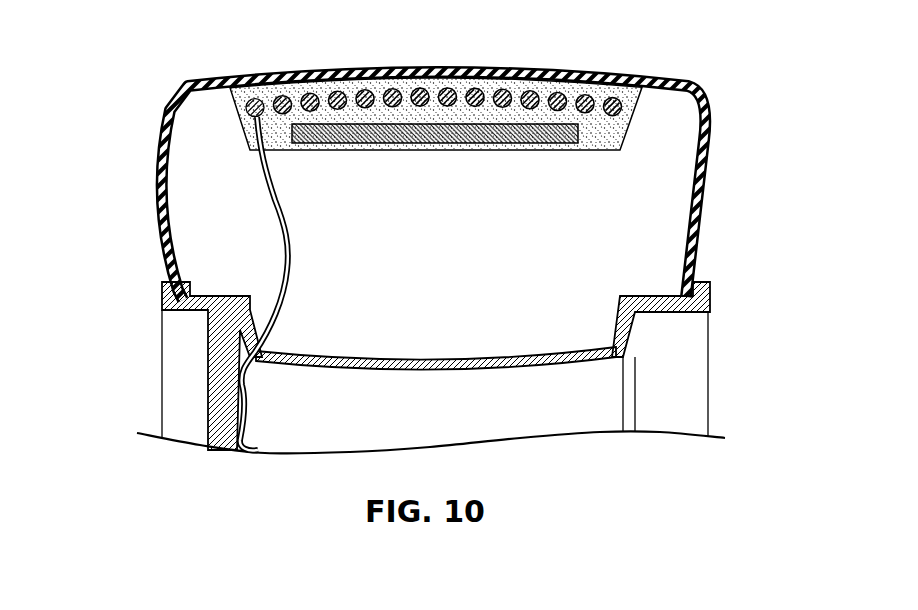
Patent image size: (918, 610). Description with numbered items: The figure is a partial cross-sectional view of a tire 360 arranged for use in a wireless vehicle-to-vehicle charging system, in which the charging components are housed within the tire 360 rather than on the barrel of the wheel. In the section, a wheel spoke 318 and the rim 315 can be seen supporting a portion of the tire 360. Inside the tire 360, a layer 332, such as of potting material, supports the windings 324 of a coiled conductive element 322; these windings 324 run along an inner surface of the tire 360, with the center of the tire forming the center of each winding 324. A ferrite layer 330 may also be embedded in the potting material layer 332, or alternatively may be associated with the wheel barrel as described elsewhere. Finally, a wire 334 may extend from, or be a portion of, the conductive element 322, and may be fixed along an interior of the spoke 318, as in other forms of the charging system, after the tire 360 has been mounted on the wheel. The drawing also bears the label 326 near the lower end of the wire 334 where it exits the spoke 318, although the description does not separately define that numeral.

The tire 360 is at (161, 199).
The windings 324 is at (587, 94).
The coiled conductive element 322 is at (511, 92).
The ferrite layer 330 is at (414, 134).
The layer 332 is at (258, 98).
The wire 334 is at (284, 271).
The rim 315 is at (287, 366).
The wheel spoke 318 is at (207, 392).
The wire end 326 is at (262, 455).